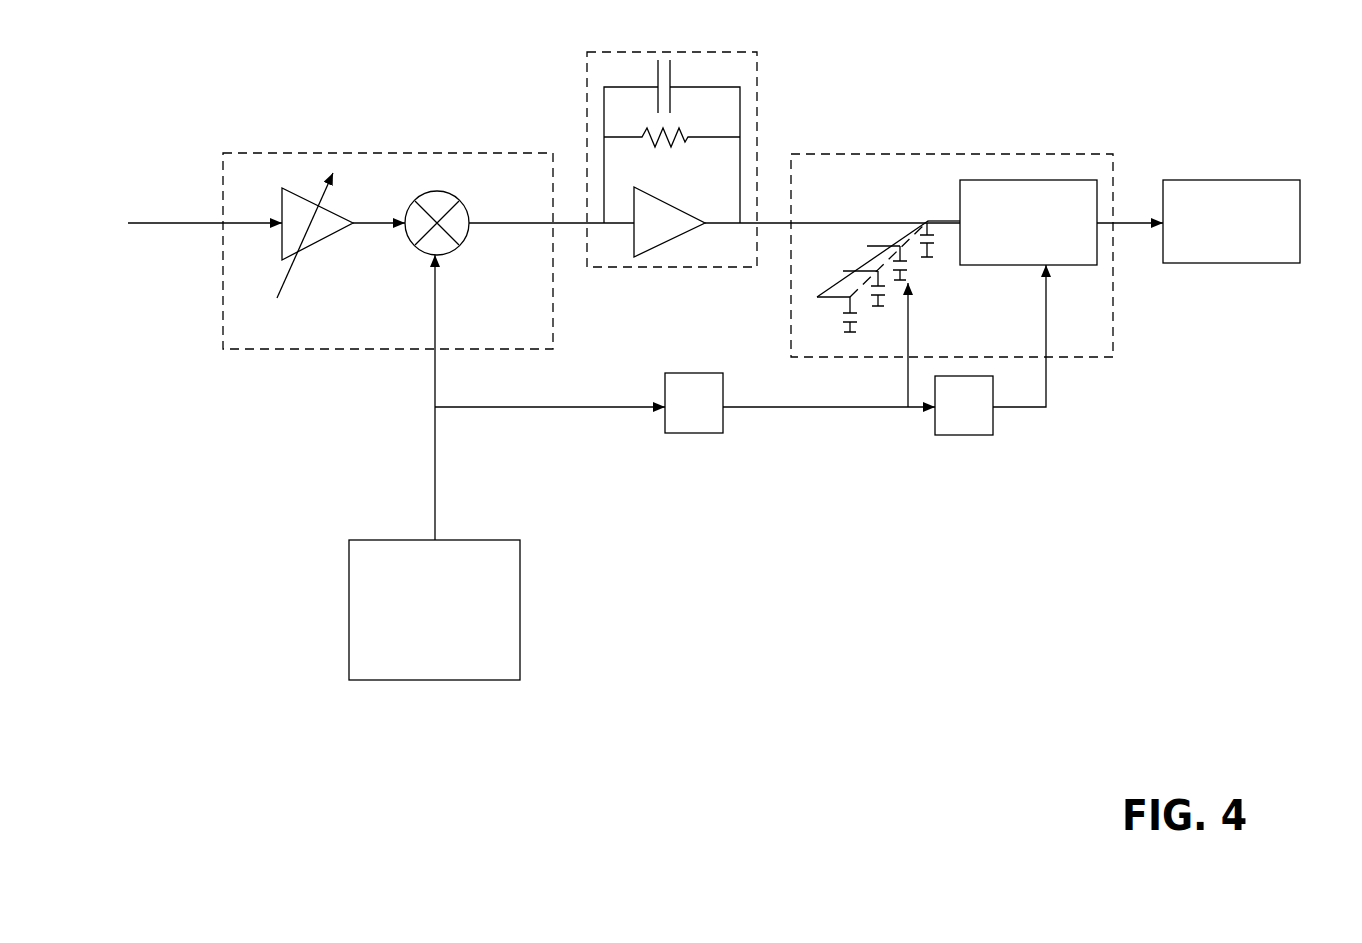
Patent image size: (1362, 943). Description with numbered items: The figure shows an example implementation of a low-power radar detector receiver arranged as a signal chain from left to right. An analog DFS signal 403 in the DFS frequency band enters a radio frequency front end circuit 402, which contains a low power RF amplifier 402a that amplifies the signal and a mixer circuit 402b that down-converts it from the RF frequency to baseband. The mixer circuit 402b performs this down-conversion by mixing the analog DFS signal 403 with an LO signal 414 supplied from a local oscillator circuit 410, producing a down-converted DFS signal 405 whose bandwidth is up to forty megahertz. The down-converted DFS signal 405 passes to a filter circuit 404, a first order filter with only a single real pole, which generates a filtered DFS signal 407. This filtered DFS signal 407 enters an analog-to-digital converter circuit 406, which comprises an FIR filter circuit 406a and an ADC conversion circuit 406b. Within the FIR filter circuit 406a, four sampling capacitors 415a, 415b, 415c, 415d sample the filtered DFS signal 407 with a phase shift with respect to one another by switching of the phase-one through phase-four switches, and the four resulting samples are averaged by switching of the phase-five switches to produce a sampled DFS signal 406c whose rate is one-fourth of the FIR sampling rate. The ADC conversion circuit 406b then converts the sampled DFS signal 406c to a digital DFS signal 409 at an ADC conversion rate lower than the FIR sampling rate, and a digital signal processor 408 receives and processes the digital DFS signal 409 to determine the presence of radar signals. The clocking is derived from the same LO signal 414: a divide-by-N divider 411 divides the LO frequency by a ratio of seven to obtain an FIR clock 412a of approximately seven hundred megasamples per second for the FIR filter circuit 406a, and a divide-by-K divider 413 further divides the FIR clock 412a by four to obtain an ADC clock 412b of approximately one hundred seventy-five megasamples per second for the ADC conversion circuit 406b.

The radio frequency front end circuit 402 is at (285, 150).
The low power RF amplifier 402a is at (320, 247).
The mixer circuit 402b is at (455, 255).
The analog DFS signal 403 is at (160, 218).
The filter circuit 404 is at (661, 42).
The down-converted DFS signal 405 is at (570, 220).
The analog-to-digital converter circuit 406 is at (1061, 153).
The FIR filter circuit 406a is at (908, 213).
The ADC conversion circuit 406b is at (1089, 273).
The sampled DFS signal 406c is at (941, 220).
The filtered DFS signal 407 is at (776, 210).
The digital signal processor 408 is at (1215, 260).
The digital DFS signal 409 is at (1134, 218).
The local oscillator circuit 410 is at (418, 681).
The divide-by-N divider 411 is at (701, 446).
The FIR clock 412a is at (907, 343).
The ADC clock 412b is at (1044, 305).
The divide-by-K divider 413 is at (963, 437).
The LO signal 414 is at (433, 445).
The sampling capacitor 415a is at (935, 240).
The sampling capacitor 415b is at (909, 263).
The sampling capacitor 415c is at (886, 288).
The sampling capacitor 415d is at (859, 314).